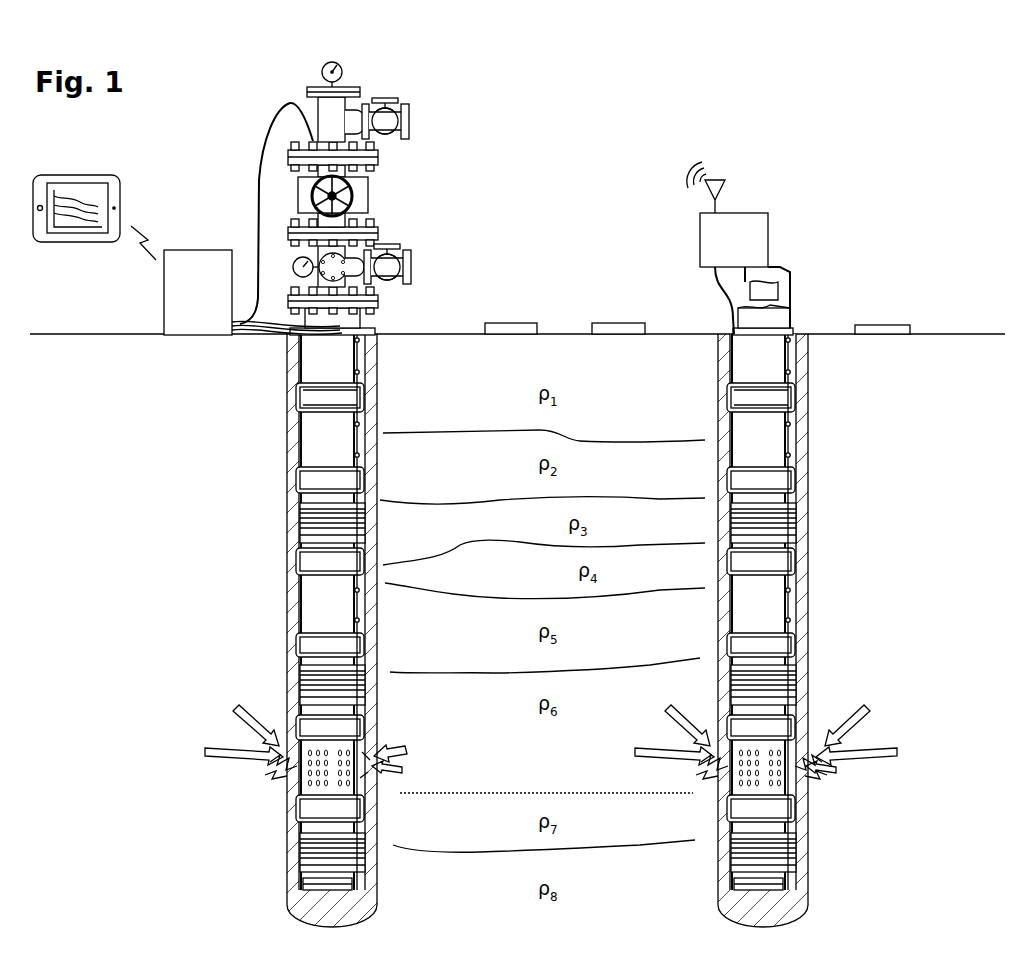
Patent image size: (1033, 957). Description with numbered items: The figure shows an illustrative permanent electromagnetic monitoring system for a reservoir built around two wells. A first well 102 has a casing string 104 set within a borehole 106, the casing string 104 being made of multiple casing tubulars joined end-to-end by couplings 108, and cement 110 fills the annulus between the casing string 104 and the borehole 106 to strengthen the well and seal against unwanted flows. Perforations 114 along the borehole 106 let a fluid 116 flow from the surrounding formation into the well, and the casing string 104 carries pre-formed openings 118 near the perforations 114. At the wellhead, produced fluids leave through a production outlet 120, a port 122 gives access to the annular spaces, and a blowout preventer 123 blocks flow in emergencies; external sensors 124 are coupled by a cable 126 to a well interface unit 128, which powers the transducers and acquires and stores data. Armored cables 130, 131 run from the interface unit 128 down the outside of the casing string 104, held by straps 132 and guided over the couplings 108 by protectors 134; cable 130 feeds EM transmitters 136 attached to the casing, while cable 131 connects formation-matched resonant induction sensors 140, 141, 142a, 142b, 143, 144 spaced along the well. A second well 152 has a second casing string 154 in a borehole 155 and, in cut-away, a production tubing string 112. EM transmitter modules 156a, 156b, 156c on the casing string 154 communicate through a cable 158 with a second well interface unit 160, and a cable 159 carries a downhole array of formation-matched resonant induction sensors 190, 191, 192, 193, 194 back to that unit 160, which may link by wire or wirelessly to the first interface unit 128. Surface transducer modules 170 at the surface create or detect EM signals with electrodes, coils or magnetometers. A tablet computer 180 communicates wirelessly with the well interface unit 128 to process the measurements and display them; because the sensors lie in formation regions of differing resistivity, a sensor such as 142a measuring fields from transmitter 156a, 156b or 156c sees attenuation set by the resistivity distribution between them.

The first well 102 is at (400, 45).
The casing string 104 is at (362, 319).
The borehole 106 is at (287, 337).
The couplings 108 is at (343, 478).
The cement 110 is at (290, 438).
The production tubing string 112 is at (778, 287).
The perforations 114 is at (285, 765).
The fluid 116 is at (305, 739).
The pre-formed openings 118 is at (312, 778).
The production outlet 120 is at (386, 106).
The port 122 is at (405, 252).
The blowout preventer 123 is at (368, 196).
The external sensors 124 is at (322, 70).
The cable 126 is at (268, 132).
The well interface unit 128 is at (164, 300).
The armored cable 130 is at (292, 325).
The armored cable 131 is at (242, 334).
The straps 132 is at (358, 341).
The protectors 134 is at (297, 400).
The EM transmitters 136 is at (300, 515).
The formation-matched resonant induction sensor 140 is at (358, 423).
The formation-matched resonant induction sensor 141 is at (358, 456).
The formation-matched resonant induction sensor 142a is at (358, 591).
The formation-matched resonant induction sensor 142b is at (358, 621).
The formation-matched resonant induction sensor 143 is at (362, 775).
The formation-matched resonant induction sensor 144 is at (355, 893).
The second well 152 is at (786, 152).
The second casing string 154 is at (795, 320).
The borehole 155 is at (716, 340).
The EM transmitter module 156a is at (796, 515).
The EM transmitter module 156b is at (796, 672).
The EM transmitter module 156c is at (796, 862).
The cable 158 is at (717, 302).
The cable 159 is at (789, 270).
The second well interface unit 160 is at (701, 270).
The surface transducer modules 170 is at (612, 322).
The tablet computer 180 is at (68, 242).
The formation-matched resonant induction sensor 190 is at (789, 423).
The formation-matched resonant induction sensor 191 is at (789, 456).
The formation-matched resonant induction sensor 192 is at (789, 621).
The formation-matched resonant induction sensor 193 is at (793, 777).
The formation-matched resonant induction sensor 194 is at (786, 893).